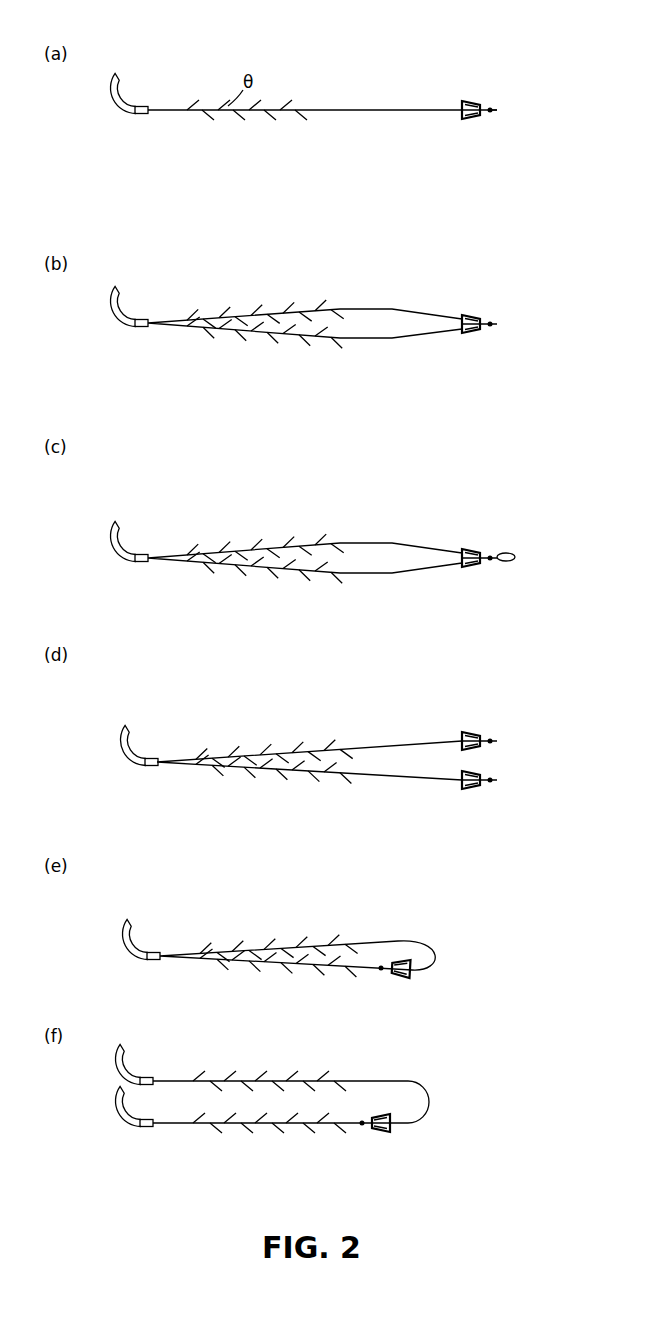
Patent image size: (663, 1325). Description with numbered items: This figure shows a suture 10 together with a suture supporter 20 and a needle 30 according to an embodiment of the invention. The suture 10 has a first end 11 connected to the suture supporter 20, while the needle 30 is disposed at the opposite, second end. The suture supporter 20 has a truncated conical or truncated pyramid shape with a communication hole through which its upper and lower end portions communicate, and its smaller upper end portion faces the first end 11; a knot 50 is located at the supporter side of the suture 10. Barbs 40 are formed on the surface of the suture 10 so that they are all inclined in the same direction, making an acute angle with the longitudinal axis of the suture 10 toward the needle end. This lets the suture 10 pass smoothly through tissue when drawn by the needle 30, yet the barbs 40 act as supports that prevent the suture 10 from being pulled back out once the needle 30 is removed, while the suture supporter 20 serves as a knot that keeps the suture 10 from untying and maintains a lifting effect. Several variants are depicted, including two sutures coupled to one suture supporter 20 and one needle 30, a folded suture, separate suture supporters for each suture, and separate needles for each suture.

The suture 10 is at (244, 139).
The first end 11 is at (502, 110).
The suture supporter 20 is at (447, 584).
The needle 30 is at (138, 609).
The barb 40 is at (272, 592).
The knot 50 is at (490, 115).